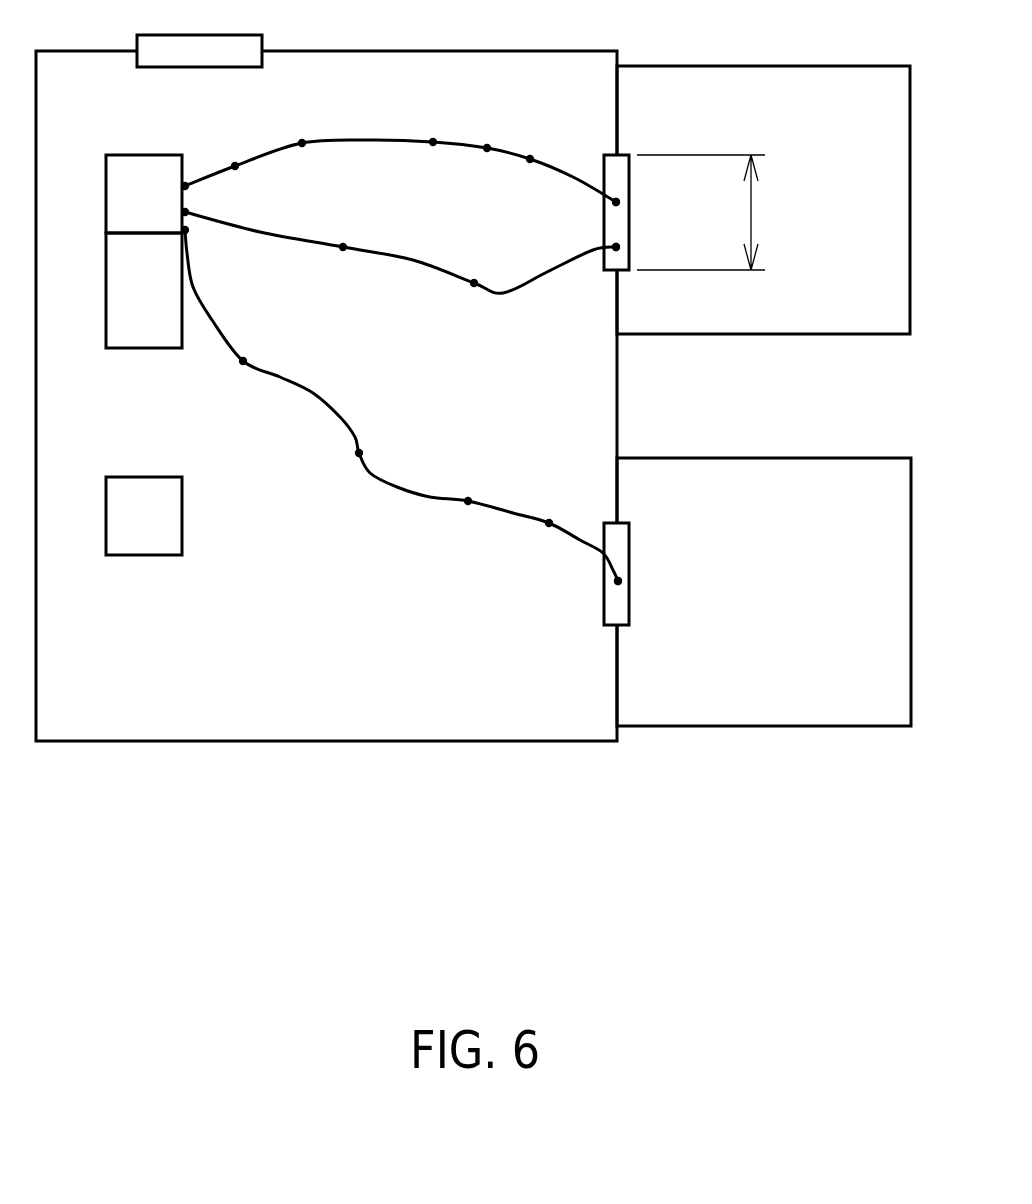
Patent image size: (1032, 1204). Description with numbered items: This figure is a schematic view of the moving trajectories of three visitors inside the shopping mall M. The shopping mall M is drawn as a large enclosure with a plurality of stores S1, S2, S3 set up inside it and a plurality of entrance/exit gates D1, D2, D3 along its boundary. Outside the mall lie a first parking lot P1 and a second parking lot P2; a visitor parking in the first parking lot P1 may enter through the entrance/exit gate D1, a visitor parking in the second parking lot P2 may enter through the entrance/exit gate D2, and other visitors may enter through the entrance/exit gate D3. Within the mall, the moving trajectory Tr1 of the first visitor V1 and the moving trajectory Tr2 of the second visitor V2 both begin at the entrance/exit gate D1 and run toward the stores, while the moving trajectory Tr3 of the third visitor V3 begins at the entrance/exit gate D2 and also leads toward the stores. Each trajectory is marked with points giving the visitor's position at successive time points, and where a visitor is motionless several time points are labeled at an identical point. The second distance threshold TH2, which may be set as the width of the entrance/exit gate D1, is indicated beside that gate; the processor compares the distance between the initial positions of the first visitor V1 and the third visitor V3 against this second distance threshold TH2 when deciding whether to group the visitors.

The shopping mall M is at (326, 396).
The entrance/exit gate D3 is at (199, 33).
The first parking lot P1 is at (763, 200).
The second parking lot P2 is at (764, 592).
The store S1 is at (144, 194).
The store S2 is at (144, 290).
The store S3 is at (144, 516).
The entrance/exit gate D1 is at (638, 212).
The entrance/exit gate D2 is at (639, 574).
The moving trajectory Tr1 is at (400, 144).
The moving trajectory Tr2 is at (400, 270).
The moving trajectory Tr3 is at (401, 405).
The first visitor V1 is at (616, 202).
The second visitor V2 is at (616, 247).
The third visitor V3 is at (618, 581).
The second distance threshold TH2 is at (726, 212).